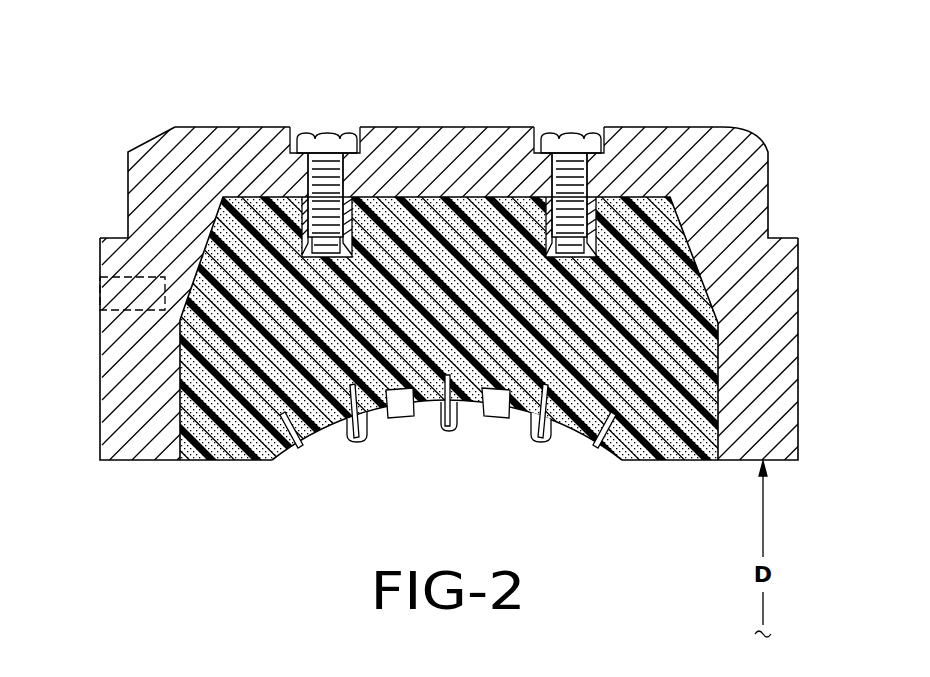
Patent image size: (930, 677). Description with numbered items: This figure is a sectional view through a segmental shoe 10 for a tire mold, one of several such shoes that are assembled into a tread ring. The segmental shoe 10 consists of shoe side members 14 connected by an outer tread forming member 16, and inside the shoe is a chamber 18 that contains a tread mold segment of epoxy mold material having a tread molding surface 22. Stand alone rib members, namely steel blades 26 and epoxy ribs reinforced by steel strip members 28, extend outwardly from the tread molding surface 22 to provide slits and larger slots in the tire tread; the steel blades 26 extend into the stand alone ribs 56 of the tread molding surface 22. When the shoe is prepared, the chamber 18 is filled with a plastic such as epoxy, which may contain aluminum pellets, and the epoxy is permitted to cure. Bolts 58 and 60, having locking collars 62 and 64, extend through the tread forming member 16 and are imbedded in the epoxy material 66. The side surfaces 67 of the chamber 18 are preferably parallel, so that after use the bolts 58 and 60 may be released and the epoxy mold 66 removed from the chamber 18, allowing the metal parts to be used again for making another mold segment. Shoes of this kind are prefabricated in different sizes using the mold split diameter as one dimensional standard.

The segmental shoe 10 is at (723, 153).
The shoe side members 14 is at (105, 358).
The outer tread forming member 16 is at (458, 127).
The chamber 18 is at (680, 270).
The tread molding surface 22 is at (292, 450).
The steel blades 26 is at (298, 448).
The steel strip members 28 is at (352, 432).
The stand alone ribs 56 is at (363, 445).
The bolt 58 is at (570, 140).
The bolt 60 is at (330, 140).
The locking collar 62 is at (598, 255).
The locking collar 64 is at (355, 255).
The epoxy material 66 is at (238, 412).
The side surface 67 is at (192, 412).